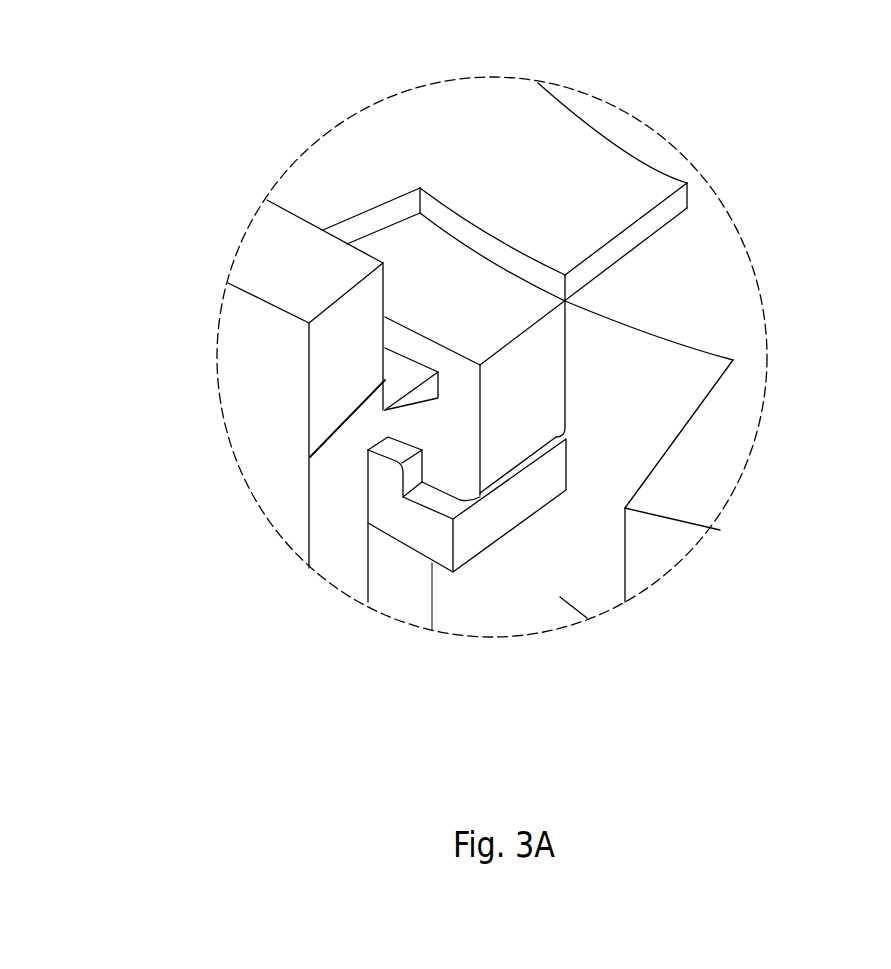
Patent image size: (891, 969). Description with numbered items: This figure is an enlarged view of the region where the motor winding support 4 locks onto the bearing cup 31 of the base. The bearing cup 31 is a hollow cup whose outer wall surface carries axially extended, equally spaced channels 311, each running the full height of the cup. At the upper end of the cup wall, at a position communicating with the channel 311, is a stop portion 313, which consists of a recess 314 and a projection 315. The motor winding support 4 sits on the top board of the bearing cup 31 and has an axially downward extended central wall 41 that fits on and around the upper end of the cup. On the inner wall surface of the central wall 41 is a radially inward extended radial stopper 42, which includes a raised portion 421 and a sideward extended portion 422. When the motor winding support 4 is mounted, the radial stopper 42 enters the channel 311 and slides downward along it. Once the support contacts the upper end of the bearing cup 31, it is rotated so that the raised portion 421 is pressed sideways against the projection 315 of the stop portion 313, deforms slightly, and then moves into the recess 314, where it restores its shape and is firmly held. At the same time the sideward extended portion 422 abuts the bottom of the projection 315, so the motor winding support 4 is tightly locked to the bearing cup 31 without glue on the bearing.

The motor winding support 4 is at (247, 323).
The central wall 41 is at (345, 553).
The radial stopper 42 is at (400, 543).
The raised portion 421 is at (385, 483).
The sideward extended portion 422 is at (432, 523).
The bearing cup 31 is at (675, 542).
The channel 311 is at (642, 367).
The stop portion 313 is at (513, 335).
The recess 314 is at (423, 422).
The projection 315 is at (465, 463).